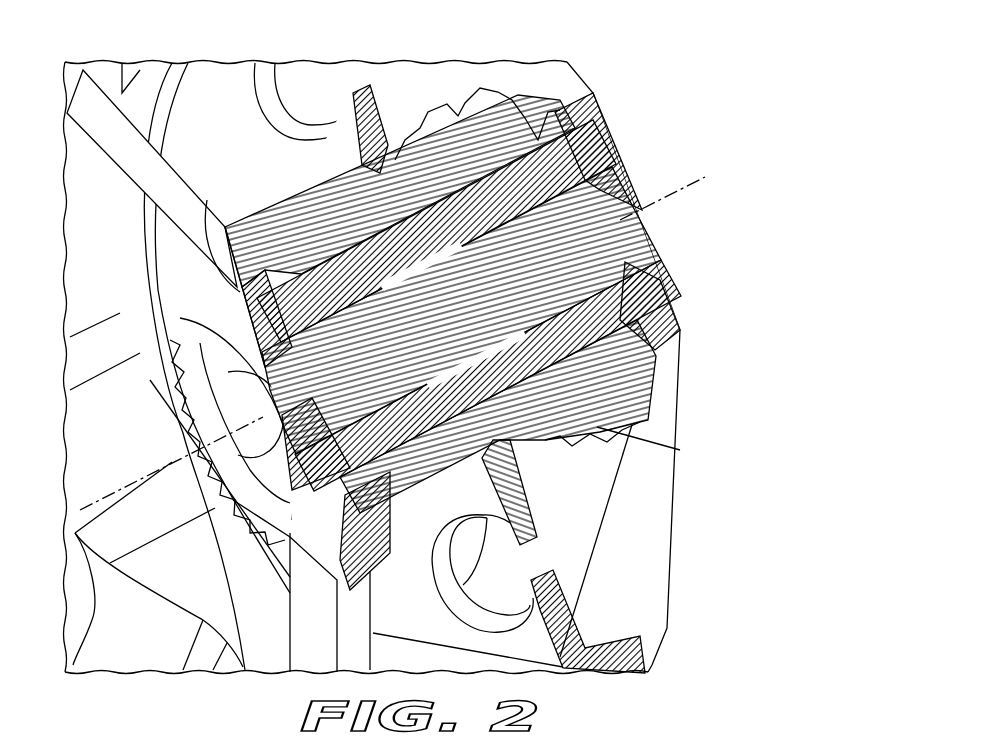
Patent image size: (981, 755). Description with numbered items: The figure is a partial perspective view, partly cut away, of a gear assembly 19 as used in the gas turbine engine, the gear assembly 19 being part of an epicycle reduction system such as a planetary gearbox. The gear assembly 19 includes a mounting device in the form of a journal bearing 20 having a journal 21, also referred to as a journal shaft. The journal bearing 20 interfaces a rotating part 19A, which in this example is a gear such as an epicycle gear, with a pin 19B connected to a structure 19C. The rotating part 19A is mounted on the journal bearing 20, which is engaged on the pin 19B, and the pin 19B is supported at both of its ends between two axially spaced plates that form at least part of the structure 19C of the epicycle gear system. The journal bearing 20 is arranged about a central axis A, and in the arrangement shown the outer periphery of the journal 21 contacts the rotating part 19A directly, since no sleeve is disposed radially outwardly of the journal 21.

The gear assembly 19 is at (518, 298).
The rotating part 19A is at (510, 98).
The pin 19B is at (650, 272).
The structure 19C is at (650, 318).
The journal bearing 20 is at (637, 380).
The journal 21 is at (637, 437).
The central axis A is at (705, 177).